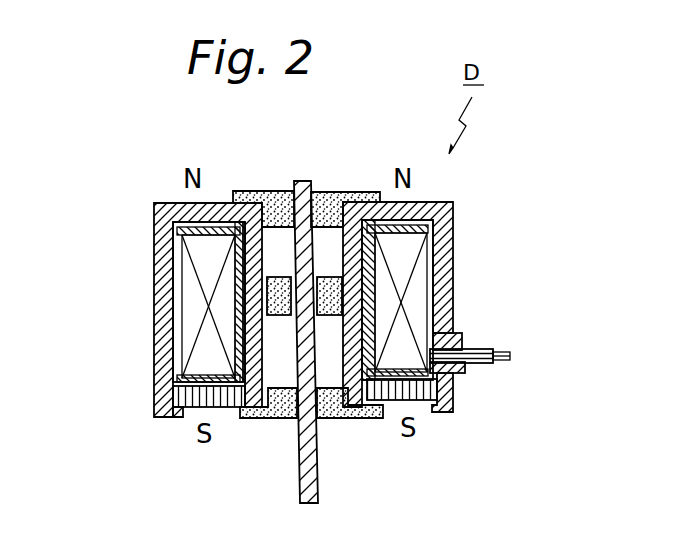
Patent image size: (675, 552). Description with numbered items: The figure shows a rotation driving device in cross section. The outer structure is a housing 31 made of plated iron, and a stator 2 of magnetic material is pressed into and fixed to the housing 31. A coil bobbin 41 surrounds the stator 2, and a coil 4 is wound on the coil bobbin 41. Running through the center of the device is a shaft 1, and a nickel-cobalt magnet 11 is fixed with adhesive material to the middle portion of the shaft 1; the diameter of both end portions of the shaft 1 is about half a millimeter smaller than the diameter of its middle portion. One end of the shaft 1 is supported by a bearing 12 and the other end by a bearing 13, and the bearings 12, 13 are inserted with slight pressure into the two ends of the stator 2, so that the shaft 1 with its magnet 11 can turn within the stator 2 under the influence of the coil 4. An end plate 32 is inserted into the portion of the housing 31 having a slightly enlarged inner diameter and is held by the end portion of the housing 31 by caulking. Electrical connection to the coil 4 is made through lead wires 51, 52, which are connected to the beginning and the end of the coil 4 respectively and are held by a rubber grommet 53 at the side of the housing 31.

The shaft 1 is at (318, 477).
The stator 2 is at (250, 197).
The nickel-cobalt magnet 11 is at (280, 277).
The bearing 12 is at (334, 192).
The bearing 13 is at (283, 418).
The housing 31 is at (153, 270).
The end plate 32 is at (424, 402).
The coil 4 is at (173, 412).
The coil bobbin 41 is at (227, 410).
The lead wire 51 is at (508, 352).
The lead wire 52 is at (507, 363).
The rubber grommet 53 is at (466, 373).